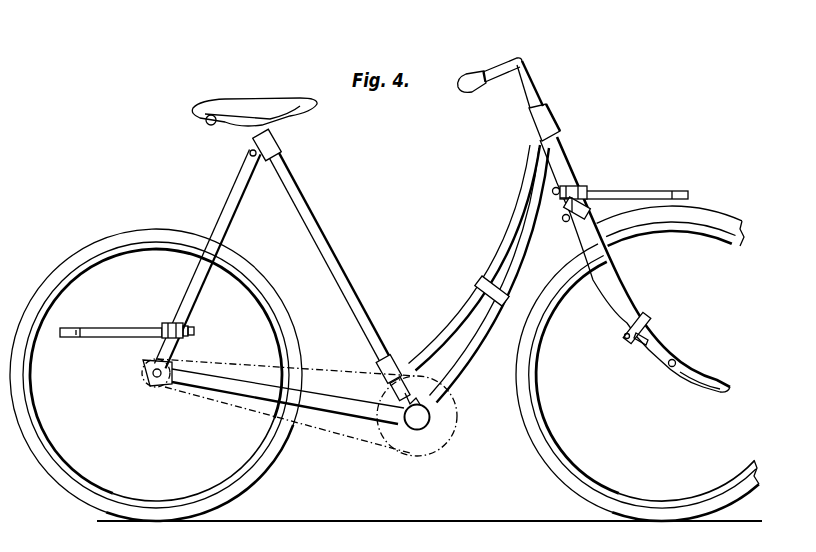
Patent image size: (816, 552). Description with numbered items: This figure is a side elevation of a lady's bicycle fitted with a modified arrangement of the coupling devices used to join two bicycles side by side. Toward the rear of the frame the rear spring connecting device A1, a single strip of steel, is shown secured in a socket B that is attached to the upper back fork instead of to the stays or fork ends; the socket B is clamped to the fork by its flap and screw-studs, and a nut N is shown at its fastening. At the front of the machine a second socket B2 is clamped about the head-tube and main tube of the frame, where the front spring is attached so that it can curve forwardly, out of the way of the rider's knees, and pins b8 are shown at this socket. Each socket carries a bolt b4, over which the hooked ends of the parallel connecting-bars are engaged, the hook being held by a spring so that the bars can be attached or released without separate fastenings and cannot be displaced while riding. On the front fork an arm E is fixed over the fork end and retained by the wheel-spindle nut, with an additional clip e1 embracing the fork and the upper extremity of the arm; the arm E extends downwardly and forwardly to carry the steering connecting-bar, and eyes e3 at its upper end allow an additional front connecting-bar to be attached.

The rear spring connecting device A1 is at (126, 327).
The socket B is at (170, 323).
The nut N is at (195, 303).
The front clamp block B2 is at (585, 186).
The pivot pin b8 is at (555, 188).
The bolt b4 is at (560, 200).
The clip e1 is at (646, 320).
The eyes e3 is at (652, 338).
The arm E is at (690, 376).